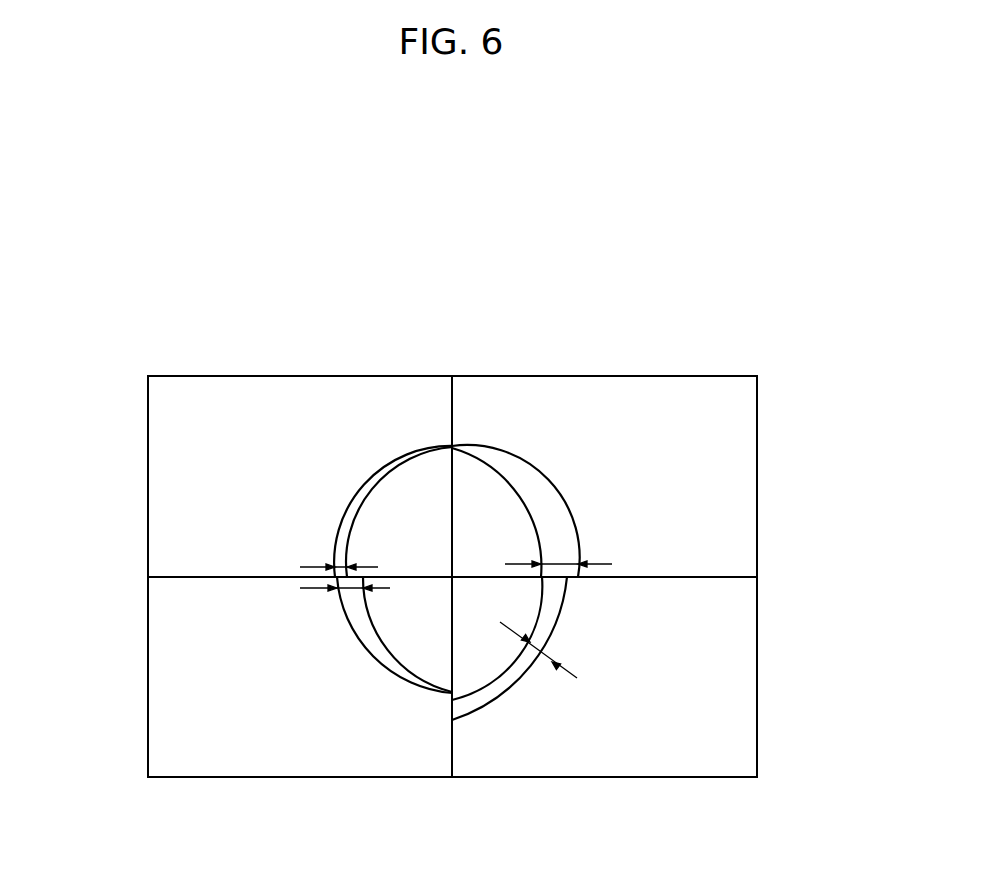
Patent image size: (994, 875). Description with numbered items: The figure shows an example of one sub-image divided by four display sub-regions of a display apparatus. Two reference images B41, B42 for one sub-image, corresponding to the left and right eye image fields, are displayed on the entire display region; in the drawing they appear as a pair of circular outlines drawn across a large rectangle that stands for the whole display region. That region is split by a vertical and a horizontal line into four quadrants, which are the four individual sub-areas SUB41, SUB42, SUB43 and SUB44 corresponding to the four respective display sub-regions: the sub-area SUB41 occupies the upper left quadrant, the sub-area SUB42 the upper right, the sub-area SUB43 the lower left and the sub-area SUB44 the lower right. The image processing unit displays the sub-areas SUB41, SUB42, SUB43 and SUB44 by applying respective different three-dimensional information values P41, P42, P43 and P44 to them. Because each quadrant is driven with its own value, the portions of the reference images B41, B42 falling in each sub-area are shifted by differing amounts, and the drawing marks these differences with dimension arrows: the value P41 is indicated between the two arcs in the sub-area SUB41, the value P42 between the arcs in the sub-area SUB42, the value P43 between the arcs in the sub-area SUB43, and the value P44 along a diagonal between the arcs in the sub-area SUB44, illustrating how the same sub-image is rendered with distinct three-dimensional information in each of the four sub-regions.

The sub-area SUB41 is at (161, 492).
The sub-area SUB42 is at (740, 492).
The sub-area SUB43 is at (161, 700).
The sub-area SUB44 is at (740, 702).
The reference image B41 is at (400, 458).
The reference image B42 is at (357, 482).
The 3D information value P41 is at (328, 554).
The 3D information value P42 is at (569, 551).
The 3D information value P43 is at (335, 600).
The 3D information value P44 is at (555, 650).